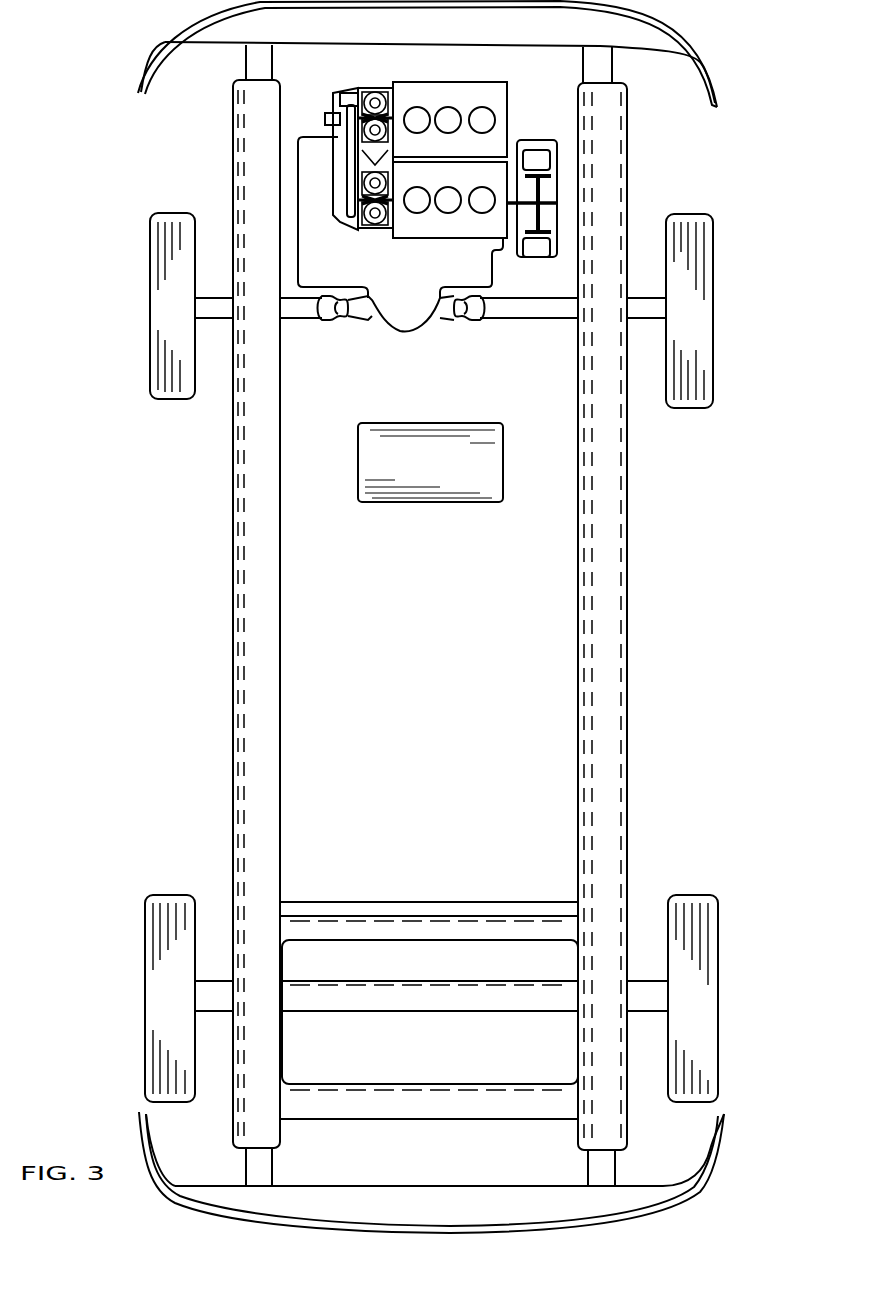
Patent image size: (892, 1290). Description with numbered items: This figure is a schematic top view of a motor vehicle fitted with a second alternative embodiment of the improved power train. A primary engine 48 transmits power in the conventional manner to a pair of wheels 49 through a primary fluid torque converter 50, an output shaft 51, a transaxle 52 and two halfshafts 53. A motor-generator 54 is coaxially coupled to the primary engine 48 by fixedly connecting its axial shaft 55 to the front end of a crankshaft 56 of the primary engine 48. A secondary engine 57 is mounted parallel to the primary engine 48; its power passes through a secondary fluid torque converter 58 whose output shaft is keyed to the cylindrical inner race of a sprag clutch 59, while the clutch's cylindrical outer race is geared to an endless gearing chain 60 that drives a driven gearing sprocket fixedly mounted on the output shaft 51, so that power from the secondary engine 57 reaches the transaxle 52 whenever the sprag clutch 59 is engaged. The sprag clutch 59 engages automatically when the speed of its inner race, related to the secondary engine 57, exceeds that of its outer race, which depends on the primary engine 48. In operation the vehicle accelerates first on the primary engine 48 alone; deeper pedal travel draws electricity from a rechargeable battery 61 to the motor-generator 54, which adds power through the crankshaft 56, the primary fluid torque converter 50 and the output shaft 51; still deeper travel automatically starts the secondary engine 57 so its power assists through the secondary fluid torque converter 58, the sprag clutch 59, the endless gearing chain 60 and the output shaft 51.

The primary engine 48 is at (463, 240).
The wheels 49 is at (150, 288).
The primary fluid torque converter 50 is at (370, 232).
The output shaft 51 is at (352, 197).
The transaxle 52 is at (408, 318).
The halfshafts 53 is at (300, 322).
The motor-generator 54 is at (558, 176).
The axial shaft 55 is at (560, 204).
The crankshaft 56 is at (516, 146).
The secondary engine 57 is at (508, 92).
The secondary fluid torque converter 58 is at (370, 92).
The sprag clutch 59 is at (338, 120).
The endless gearing chain 60 is at (348, 152).
The rechargeable battery 61 is at (440, 478).